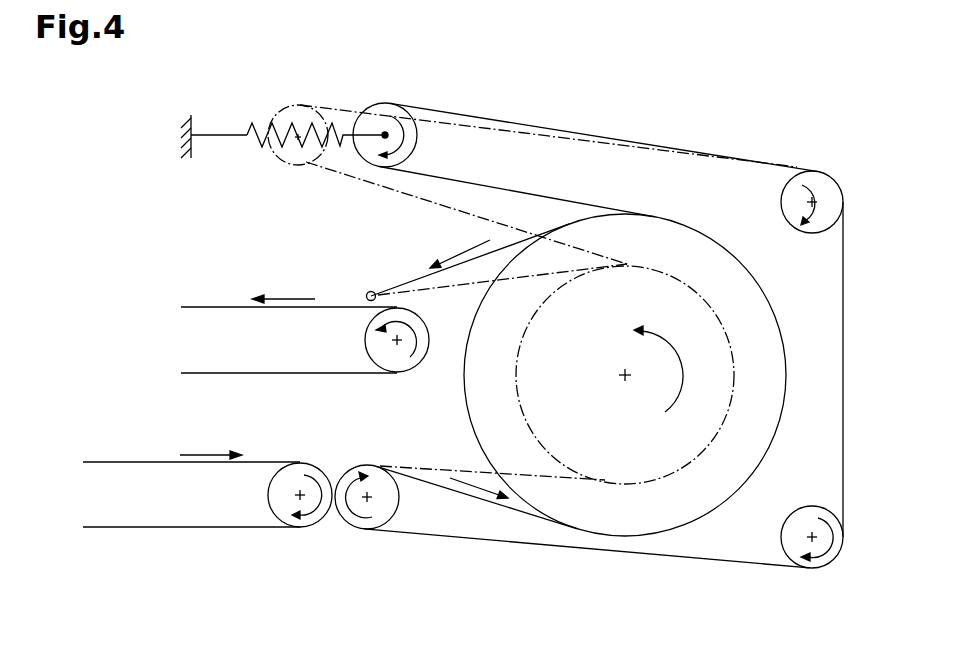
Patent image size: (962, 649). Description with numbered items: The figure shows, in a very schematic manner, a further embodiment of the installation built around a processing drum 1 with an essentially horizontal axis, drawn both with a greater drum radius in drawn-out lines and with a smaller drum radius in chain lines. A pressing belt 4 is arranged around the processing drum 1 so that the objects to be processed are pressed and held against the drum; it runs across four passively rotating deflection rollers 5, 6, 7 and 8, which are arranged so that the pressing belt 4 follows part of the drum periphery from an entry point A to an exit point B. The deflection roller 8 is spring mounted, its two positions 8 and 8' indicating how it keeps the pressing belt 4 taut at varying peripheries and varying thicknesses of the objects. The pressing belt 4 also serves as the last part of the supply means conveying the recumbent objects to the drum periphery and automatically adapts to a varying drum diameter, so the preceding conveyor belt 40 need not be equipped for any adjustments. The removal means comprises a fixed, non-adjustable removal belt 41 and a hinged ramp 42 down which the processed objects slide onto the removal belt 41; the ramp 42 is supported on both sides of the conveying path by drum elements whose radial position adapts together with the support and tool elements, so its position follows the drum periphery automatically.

The processing drum 1 is at (449, 387).
The pressing belt 4 is at (487, 541).
The deflection roller 5 is at (363, 529).
The deflection roller 6 is at (835, 560).
The deflection roller 7 is at (829, 181).
The deflection roller 8 is at (374, 98).
The deflection roller position 8' is at (283, 97).
The conveyor belt 40 is at (139, 455).
The removal belt 41 is at (212, 292).
The hinged ramp 42 is at (377, 293).
The entry point A is at (462, 461).
The exit point B is at (489, 237).